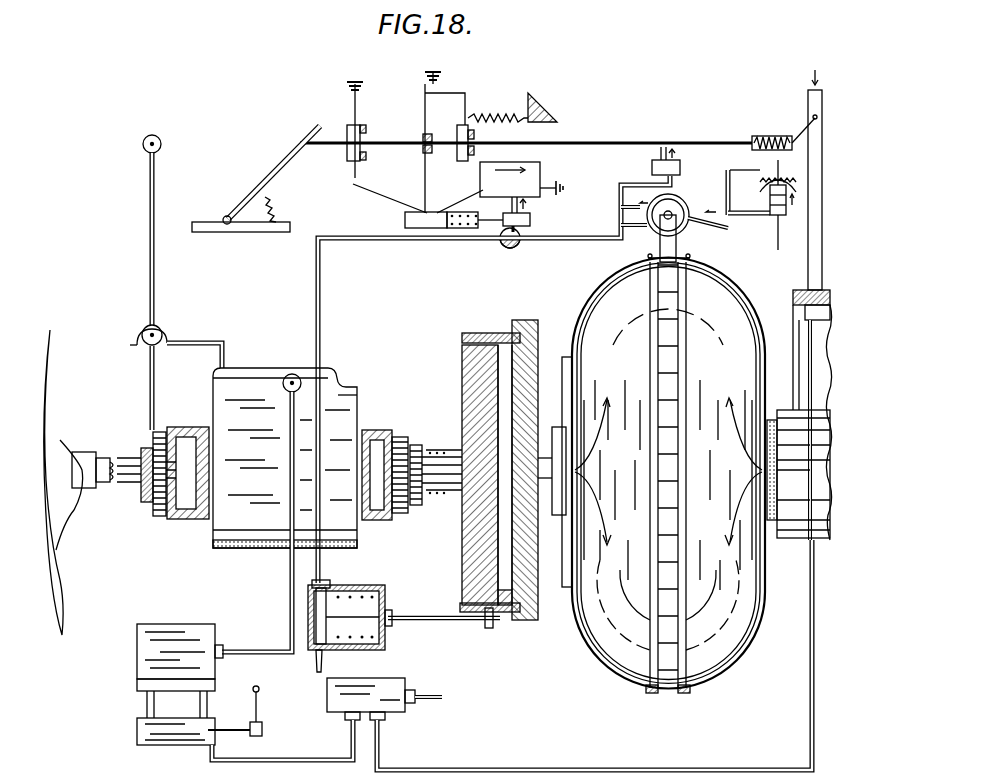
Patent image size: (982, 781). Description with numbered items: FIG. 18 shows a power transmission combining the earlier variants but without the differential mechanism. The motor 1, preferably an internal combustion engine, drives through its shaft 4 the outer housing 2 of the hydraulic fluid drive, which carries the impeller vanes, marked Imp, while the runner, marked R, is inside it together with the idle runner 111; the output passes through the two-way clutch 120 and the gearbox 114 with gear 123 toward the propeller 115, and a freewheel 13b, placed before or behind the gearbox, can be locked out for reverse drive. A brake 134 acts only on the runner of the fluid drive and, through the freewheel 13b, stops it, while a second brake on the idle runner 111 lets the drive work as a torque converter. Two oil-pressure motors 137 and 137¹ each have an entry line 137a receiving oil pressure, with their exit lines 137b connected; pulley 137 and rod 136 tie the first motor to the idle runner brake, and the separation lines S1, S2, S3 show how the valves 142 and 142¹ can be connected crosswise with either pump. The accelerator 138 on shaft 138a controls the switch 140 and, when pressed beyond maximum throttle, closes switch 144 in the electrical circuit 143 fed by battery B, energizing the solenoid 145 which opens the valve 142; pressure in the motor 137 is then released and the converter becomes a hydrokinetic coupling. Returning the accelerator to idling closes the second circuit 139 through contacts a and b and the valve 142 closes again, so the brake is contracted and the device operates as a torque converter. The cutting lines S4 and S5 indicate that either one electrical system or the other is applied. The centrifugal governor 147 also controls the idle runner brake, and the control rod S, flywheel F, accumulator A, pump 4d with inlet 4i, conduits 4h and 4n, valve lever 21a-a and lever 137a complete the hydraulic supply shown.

The motor 1 is at (808, 100).
The outer housing 2 is at (590, 312).
The shaft 4 is at (812, 383).
The pump 4d is at (371, 699).
The conduit 4h is at (594, 655).
The inlet pipe 4i is at (428, 686).
The conduit 4n is at (282, 740).
The freewheel 13b is at (196, 427).
The valve lever 21a-a is at (263, 737).
The idle runner 111 is at (668, 692).
The gearbox 114 is at (236, 552).
The propeller 115 is at (48, 384).
The two-way clutch 120 is at (462, 362).
The gear 123 is at (438, 500).
The brake 134 is at (506, 613).
The shaft rod 136 is at (680, 289).
The motor 137 is at (686, 228).
The entry line 137a is at (730, 230).
The exit line 137b is at (684, 186).
The accelerator 138 is at (302, 134).
The shaft 138a is at (652, 143).
The second circuit 139 is at (351, 96).
The second switch 140 is at (360, 147).
The valve 142 is at (652, 167).
The electrical circuit 143 is at (436, 84).
The switch 144 is at (456, 123).
The solenoid 145 is at (405, 222).
The centrifugal governor 147 is at (756, 174).
The accumulator A is at (774, 474).
The battery B is at (500, 187).
The flywheel F is at (193, 525).
The runner flow R is at (603, 467).
The impeller flow Imp is at (720, 468).
The control rod S is at (176, 282).
The separation line S1 is at (612, 226).
The separation line S2 is at (502, 243).
The separation line S3 is at (621, 205).
The cutting line S4 is at (352, 185).
The cutting line S5 is at (427, 184).
The contact a is at (421, 140).
The contact b is at (474, 143).